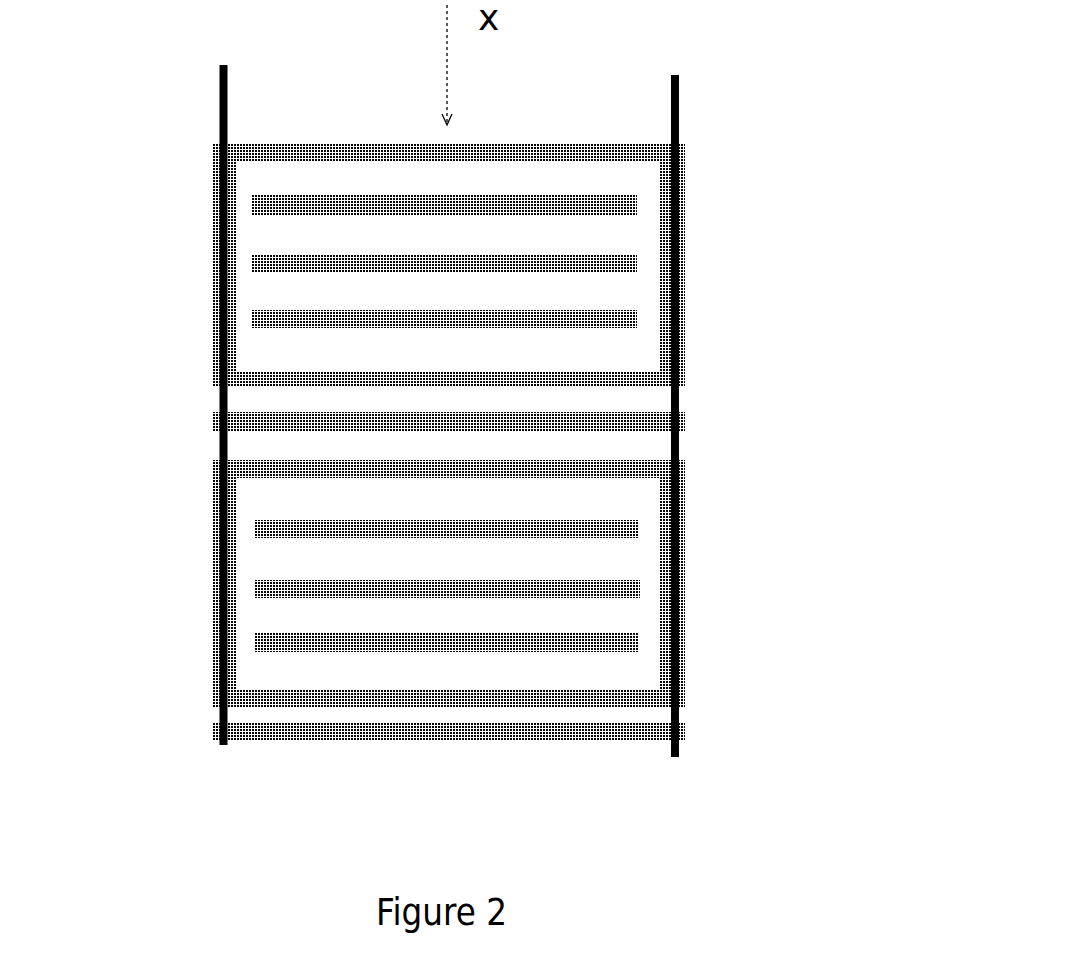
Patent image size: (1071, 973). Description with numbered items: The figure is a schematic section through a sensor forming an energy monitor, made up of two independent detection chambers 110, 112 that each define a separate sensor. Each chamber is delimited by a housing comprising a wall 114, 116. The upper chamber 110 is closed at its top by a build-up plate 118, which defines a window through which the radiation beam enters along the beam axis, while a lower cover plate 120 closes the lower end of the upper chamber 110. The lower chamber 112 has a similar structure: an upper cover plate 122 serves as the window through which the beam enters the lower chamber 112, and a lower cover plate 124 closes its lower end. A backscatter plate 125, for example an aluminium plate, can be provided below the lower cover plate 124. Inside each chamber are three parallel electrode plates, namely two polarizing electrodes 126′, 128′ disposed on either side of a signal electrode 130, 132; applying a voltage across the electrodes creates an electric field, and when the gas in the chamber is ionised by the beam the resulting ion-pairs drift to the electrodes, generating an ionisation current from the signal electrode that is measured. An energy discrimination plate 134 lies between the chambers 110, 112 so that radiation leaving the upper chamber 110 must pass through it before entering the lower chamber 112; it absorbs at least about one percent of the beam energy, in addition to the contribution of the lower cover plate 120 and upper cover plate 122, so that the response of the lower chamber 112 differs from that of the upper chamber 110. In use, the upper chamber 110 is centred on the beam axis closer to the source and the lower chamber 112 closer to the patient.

The detection chamber 110 is at (461, 227).
The detection chamber 112 is at (455, 583).
The wall 114 is at (222, 262).
The wall 116 is at (214, 655).
The build-up plate 118 is at (638, 137).
The lower cover plate 120 is at (267, 382).
The upper cover plate 122 is at (267, 467).
The lower cover plate 124 is at (640, 693).
The backscatter plate 125 is at (653, 733).
The polarizing electrode 126′ is at (622, 199).
The polarizing electrode 128′ is at (644, 532).
The signal electrode 130 is at (606, 256).
The signal electrode 132 is at (256, 598).
The energy discrimination plate 134 is at (621, 418).